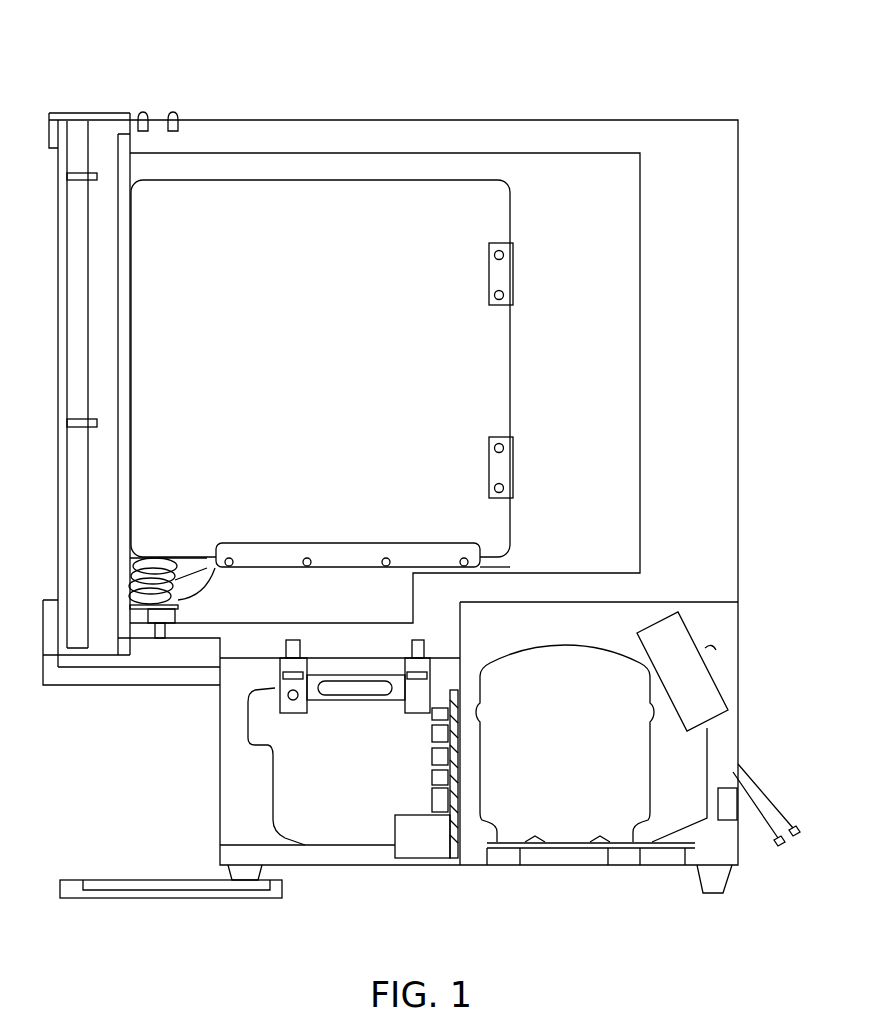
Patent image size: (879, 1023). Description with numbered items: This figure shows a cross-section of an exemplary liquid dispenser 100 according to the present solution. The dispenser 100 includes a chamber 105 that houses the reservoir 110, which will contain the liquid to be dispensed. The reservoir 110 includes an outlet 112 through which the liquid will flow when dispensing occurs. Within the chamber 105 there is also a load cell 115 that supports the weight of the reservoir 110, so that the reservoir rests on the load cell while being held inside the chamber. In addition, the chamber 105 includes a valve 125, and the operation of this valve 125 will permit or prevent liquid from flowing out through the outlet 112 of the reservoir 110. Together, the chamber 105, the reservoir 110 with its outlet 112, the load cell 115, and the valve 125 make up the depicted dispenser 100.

The liquid dispenser 100 is at (421, 526).
The chamber 105 is at (308, 117).
The reservoir 110 is at (318, 294).
The outlet 112 is at (150, 598).
The load cell 115 is at (350, 692).
The valve 125 is at (158, 640).